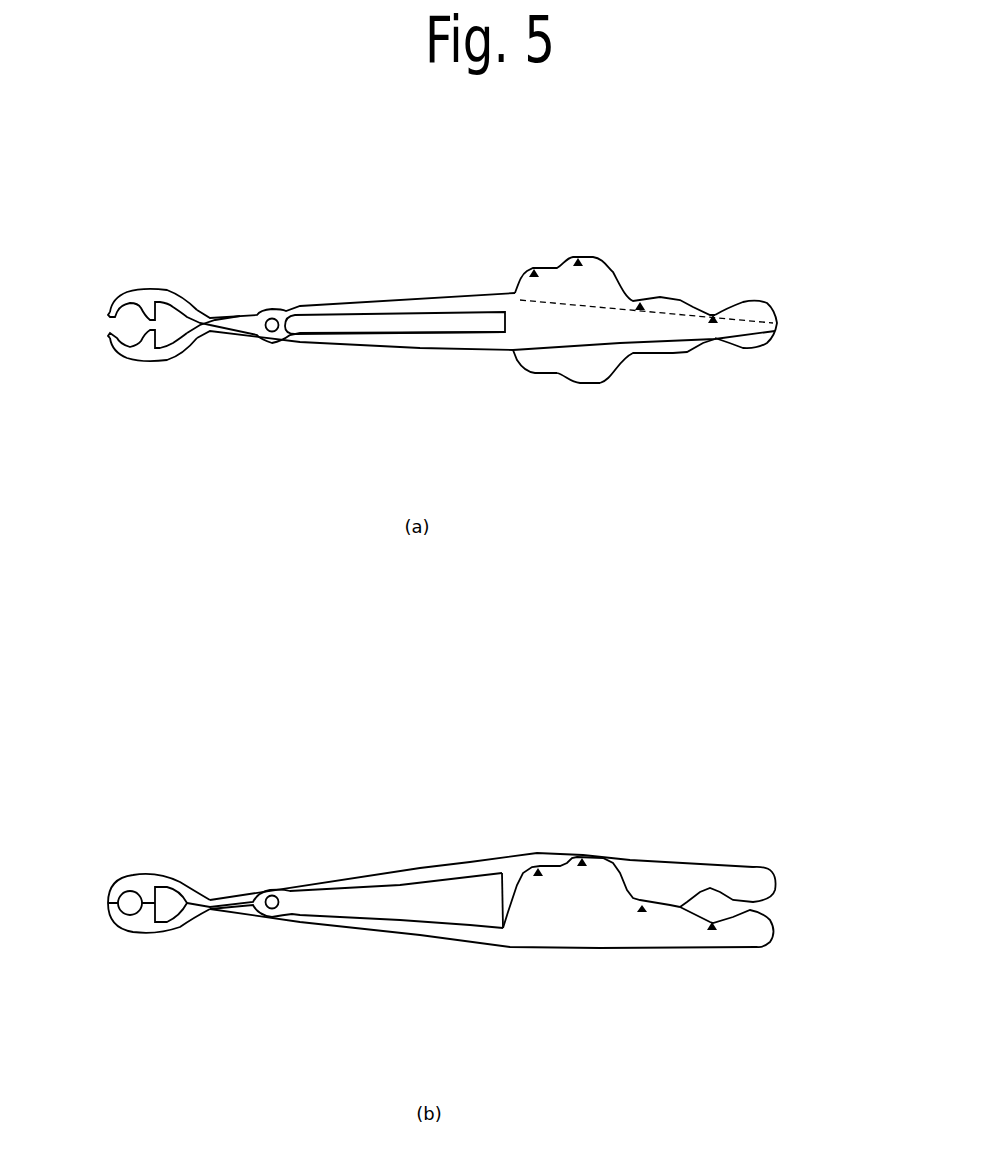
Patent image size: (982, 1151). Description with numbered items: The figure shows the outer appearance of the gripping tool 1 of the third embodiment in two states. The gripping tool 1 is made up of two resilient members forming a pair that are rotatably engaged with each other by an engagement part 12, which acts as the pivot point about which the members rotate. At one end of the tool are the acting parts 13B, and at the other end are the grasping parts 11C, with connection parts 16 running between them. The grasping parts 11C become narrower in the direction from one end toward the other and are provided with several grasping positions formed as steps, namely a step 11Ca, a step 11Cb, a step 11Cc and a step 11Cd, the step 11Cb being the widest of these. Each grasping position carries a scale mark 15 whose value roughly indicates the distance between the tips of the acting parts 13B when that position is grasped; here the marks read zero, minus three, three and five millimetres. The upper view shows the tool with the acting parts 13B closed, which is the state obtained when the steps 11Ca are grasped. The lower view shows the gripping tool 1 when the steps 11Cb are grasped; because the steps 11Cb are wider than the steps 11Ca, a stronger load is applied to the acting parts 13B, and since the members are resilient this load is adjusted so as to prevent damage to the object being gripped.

The gripping tool 1 is at (131, 157).
The engagement part 12 is at (268, 338).
The acting parts 13B is at (155, 362).
The scale mark 15 is at (595, 258).
The connection parts 16 is at (500, 228).
The grasping parts 11C is at (750, 298).
The step 11Ca is at (537, 374).
The step 11Cb is at (588, 384).
The step 11Cc is at (656, 354).
The step 11Cd is at (718, 340).